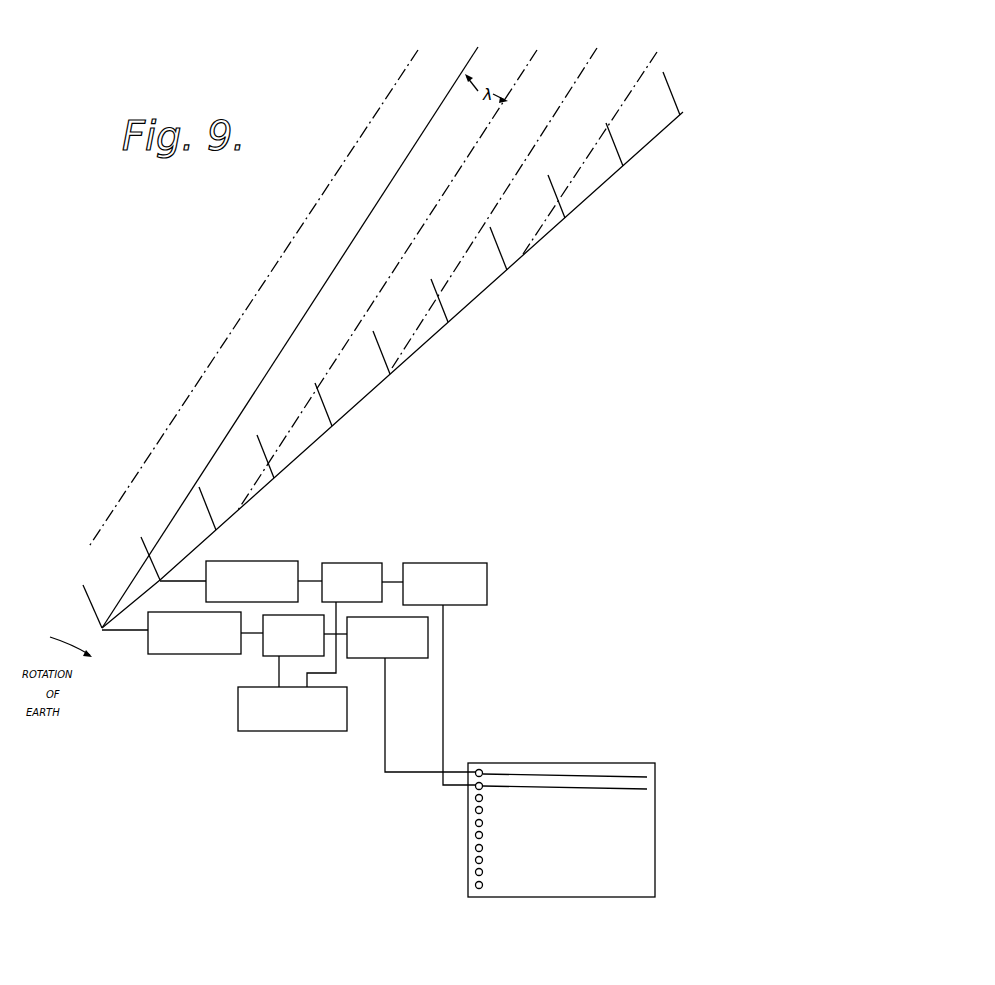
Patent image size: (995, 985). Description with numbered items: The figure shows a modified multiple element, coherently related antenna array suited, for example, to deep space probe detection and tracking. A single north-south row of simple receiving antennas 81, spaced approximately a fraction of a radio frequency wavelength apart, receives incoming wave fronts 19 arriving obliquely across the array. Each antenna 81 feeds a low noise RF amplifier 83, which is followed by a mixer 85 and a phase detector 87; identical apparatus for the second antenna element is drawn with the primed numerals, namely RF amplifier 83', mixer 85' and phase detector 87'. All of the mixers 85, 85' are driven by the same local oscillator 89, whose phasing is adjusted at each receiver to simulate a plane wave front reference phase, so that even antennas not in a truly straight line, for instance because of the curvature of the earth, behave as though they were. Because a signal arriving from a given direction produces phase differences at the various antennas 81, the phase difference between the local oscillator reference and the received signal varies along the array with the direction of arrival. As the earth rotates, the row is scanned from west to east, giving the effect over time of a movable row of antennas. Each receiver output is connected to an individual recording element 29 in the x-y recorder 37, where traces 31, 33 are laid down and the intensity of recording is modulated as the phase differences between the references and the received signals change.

The wave fronts 19 is at (581, 80).
The receiving antenna 81 is at (88, 608).
The RF amplifier 83 is at (194, 621).
The RF amplifier 83' is at (252, 571).
The mixer 85 is at (283, 646).
The mixer 85' is at (352, 570).
The phase detector 87 is at (387, 648).
The phase detector 87' is at (445, 572).
The local oscillator 89 is at (238, 701).
The recording element 29 is at (483, 769).
The recorder trace 31 is at (561, 772).
The recorder trace 33 is at (603, 785).
The x-y recorder 37 is at (463, 877).